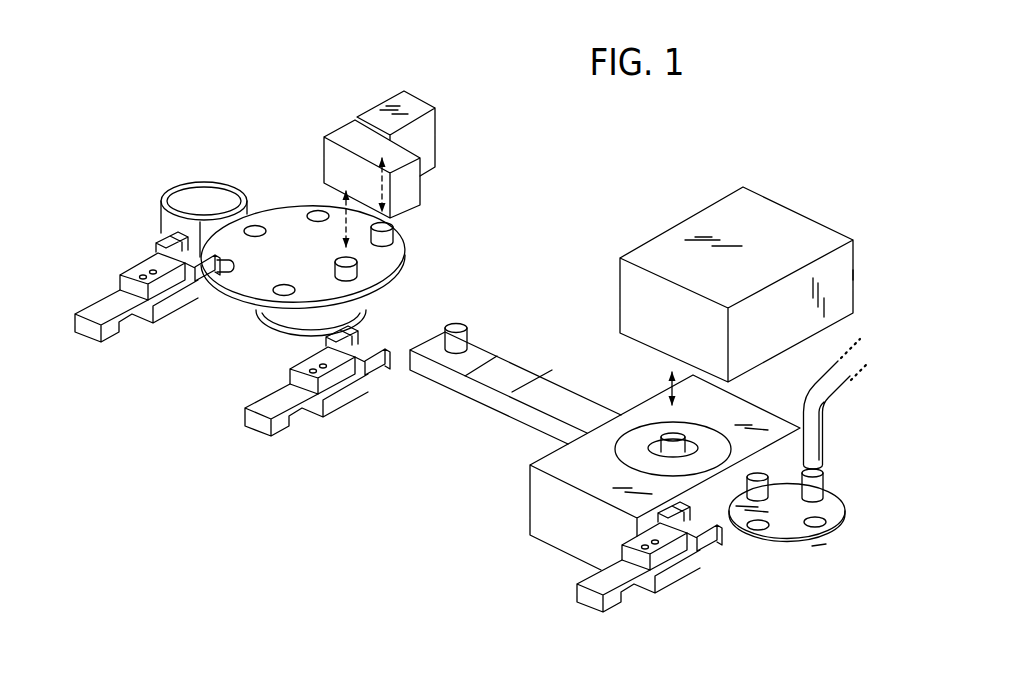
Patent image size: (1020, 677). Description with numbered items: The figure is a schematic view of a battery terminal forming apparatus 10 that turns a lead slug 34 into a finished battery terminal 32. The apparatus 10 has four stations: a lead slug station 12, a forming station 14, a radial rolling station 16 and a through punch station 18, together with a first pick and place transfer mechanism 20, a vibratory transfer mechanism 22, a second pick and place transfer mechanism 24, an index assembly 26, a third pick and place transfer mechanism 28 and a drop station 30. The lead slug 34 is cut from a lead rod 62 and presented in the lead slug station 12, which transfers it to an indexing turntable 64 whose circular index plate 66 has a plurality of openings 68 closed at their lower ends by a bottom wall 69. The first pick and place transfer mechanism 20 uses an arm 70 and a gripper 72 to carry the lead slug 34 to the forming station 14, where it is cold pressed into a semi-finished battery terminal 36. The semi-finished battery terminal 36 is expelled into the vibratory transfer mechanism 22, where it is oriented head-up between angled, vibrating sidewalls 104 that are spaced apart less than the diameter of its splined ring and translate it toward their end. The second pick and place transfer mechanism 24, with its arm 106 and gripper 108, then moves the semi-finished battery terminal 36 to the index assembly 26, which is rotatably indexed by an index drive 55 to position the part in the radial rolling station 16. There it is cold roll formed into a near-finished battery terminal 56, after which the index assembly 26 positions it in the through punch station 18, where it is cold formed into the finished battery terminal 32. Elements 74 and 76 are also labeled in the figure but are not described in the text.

The battery terminal forming apparatus 10 is at (350, 475).
The lead slug station 12 is at (847, 493).
The forming station 14 is at (806, 193).
The radial rolling station 16 is at (424, 192).
The through punch station 18 is at (430, 92).
The first pick and place transfer mechanism 20 is at (625, 576).
The vibratory transfer mechanism 22 is at (445, 405).
The second pick and place transfer mechanism 24 is at (248, 447).
The index assembly 26 is at (232, 318).
The third pick and place transfer mechanism 28 is at (93, 345).
The drop station 30 is at (196, 170).
The finished battery terminal 32 is at (393, 231).
The lead slug 34 is at (822, 478).
The semi-finished battery terminal 36 is at (458, 323).
The index drive 55 is at (368, 307).
The near-finished battery terminal 56 is at (335, 268).
The lead rod 62 is at (846, 366).
The indexing turntable 64 is at (786, 553).
The circular index plate 66 is at (770, 548).
The openings 68 is at (815, 522).
The bottom wall 69 is at (818, 548).
The arm 70 is at (583, 573).
The gripper 72 is at (712, 550).
The receiving ring 74 is at (618, 460).
The housing side wall 76 is at (854, 275).
The sidewalls 104 is at (560, 370).
The arm 106 is at (270, 397).
The gripper 108 is at (363, 373).